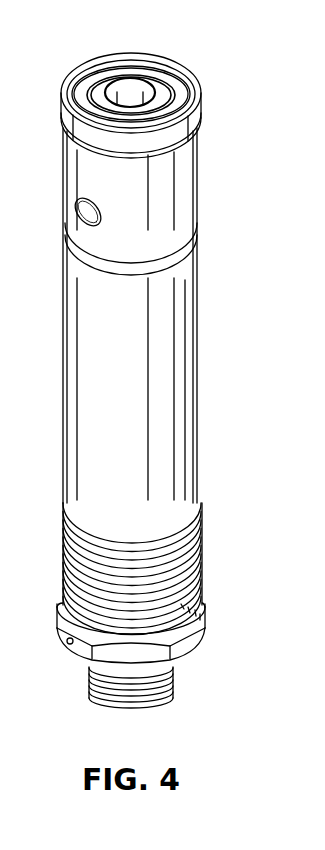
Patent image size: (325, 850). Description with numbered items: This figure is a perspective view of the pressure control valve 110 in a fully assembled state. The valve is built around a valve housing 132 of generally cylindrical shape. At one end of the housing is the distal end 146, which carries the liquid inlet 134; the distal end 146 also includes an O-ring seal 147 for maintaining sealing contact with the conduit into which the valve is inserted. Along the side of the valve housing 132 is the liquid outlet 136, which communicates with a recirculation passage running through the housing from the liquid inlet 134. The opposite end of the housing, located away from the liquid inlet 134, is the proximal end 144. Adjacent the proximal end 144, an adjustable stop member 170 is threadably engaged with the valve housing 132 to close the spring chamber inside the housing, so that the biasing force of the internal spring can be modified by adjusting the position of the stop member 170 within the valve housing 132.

The pressure control valve 110 is at (222, 128).
The valve housing 132 is at (190, 320).
The liquid inlet 134 is at (125, 88).
The liquid outlet 136 is at (76, 213).
The proximal end 144 is at (85, 664).
The distal end 146 is at (68, 82).
The O-ring seal 147 is at (170, 72).
The adjustable stop member 170 is at (175, 690).